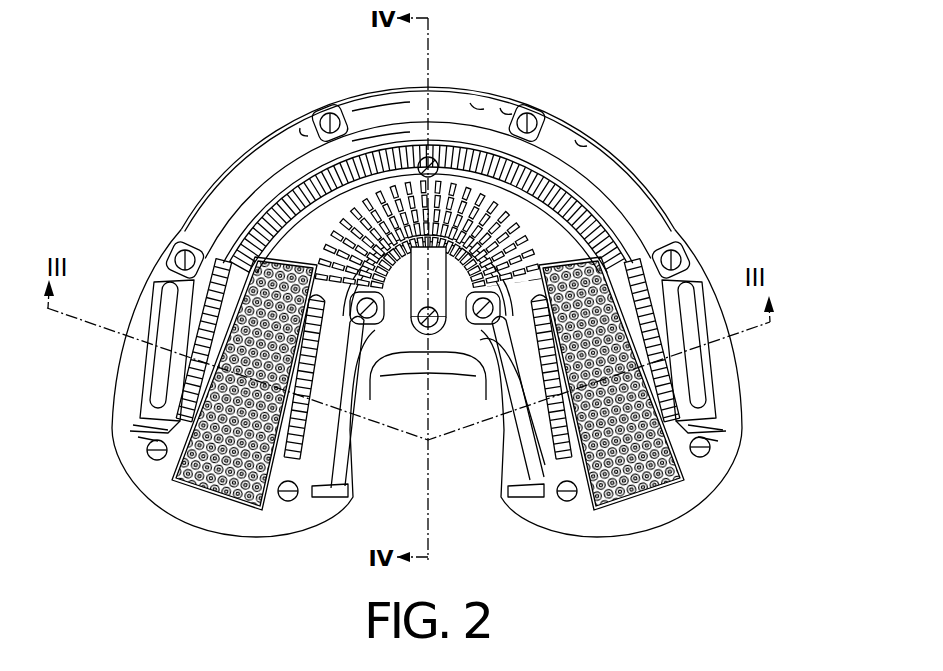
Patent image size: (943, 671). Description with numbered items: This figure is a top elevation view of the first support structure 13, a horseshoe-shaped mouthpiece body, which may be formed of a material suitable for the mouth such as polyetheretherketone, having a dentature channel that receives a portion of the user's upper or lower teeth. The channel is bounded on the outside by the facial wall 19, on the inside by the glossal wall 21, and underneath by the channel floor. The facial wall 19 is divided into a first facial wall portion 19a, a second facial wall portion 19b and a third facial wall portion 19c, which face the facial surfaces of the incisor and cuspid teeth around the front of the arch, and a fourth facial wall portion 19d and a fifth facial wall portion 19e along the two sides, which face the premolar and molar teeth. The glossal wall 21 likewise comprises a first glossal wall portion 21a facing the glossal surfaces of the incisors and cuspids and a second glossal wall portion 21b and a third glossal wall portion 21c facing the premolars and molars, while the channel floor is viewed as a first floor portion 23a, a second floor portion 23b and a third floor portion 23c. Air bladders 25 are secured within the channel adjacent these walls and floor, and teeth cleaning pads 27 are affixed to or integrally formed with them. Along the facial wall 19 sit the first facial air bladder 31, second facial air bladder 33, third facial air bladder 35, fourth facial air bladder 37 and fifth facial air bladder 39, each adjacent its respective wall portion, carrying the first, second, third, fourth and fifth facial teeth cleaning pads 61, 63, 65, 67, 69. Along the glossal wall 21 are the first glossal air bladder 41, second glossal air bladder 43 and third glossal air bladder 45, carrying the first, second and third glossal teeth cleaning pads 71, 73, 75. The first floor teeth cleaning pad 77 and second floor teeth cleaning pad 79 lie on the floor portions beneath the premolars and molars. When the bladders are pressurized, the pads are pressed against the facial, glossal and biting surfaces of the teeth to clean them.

The first support structure 13 is at (673, 217).
The facial wall 19 is at (480, 100).
The first facial wall portion 19a is at (503, 112).
The second facial wall portion 19b is at (300, 120).
The third facial wall portion 19c is at (580, 143).
The fourth facial wall portion 19d is at (150, 327).
The fifth facial wall portion 19e is at (705, 330).
The glossal wall 21 is at (400, 367).
The first glossal wall portion 21a is at (440, 340).
The second glossal wall portion 21b is at (340, 490).
The third glossal wall portion 21c is at (510, 470).
The first floor portion 23a is at (298, 168).
The second floor portion 23b is at (145, 282).
The third floor portion 23c is at (705, 262).
The air bladders 25 is at (290, 152).
The teeth cleaning pads 27 is at (553, 120).
The first facial air bladder 31 is at (374, 127).
The second facial air bladder 33 is at (217, 228).
The third facial air bladder 35 is at (600, 177).
The fourth facial air bladder 37 is at (187, 367).
The fifth facial air bladder 39 is at (650, 368).
The first glossal air bladder 41 is at (515, 440).
The second glossal air bladder 43 is at (342, 438).
The third glossal air bladder 45 is at (500, 465).
The first facial teeth cleaning pad 61 is at (412, 145).
The second facial teeth cleaning pad 63 is at (258, 215).
The third facial teeth cleaning pad 65 is at (657, 187).
The fourth facial teeth cleaning pad 67 is at (180, 392).
The fifth facial teeth cleaning pad 69 is at (688, 387).
The first glossal teeth cleaning pad 71 is at (450, 195).
The second glossal teeth cleaning pad 73 is at (287, 501).
The third glossal teeth cleaning pad 75 is at (600, 501).
The first floor teeth cleaning pad 77 is at (215, 494).
The second floor teeth cleaning pad 79 is at (673, 480).